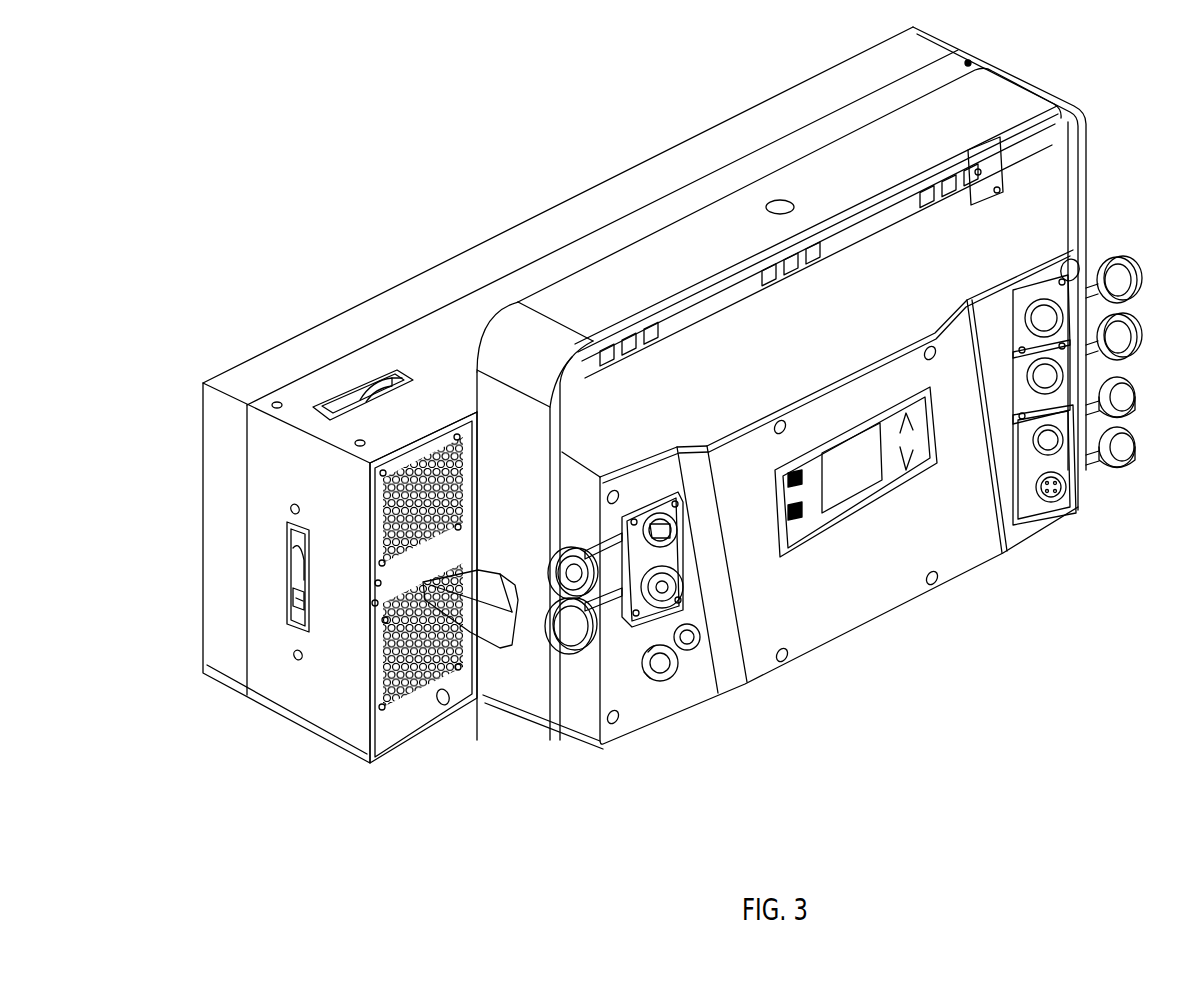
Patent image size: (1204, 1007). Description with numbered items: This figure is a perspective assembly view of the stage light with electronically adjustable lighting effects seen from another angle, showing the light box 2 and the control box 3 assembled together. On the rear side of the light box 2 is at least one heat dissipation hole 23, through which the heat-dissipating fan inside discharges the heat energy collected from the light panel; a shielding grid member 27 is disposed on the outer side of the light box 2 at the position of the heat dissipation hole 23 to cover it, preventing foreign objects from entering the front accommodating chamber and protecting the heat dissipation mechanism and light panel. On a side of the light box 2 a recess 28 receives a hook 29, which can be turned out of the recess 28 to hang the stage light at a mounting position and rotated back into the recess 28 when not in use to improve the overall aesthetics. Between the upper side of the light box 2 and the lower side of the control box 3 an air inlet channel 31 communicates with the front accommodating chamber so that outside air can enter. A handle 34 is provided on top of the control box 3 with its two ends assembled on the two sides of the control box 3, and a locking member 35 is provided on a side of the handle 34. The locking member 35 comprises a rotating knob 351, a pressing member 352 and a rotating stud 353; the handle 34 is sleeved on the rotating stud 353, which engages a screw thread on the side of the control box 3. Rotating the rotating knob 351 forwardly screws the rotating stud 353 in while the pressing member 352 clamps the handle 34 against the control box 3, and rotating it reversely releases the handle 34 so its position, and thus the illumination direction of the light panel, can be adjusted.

The light box 2 is at (525, 395).
The heat dissipation hole 23 is at (456, 446).
The shielding grid member 27 is at (286, 580).
The recess 28 is at (270, 608).
The hook 29 is at (277, 556).
The control box 3 is at (792, 437).
The air inlet channel 31 is at (707, 313).
The handle 34 is at (615, 298).
The locking member 35 is at (513, 697).
The rotating knob 351 is at (480, 628).
The pressing member 352 is at (523, 601).
The rotating stud 353 is at (567, 658).